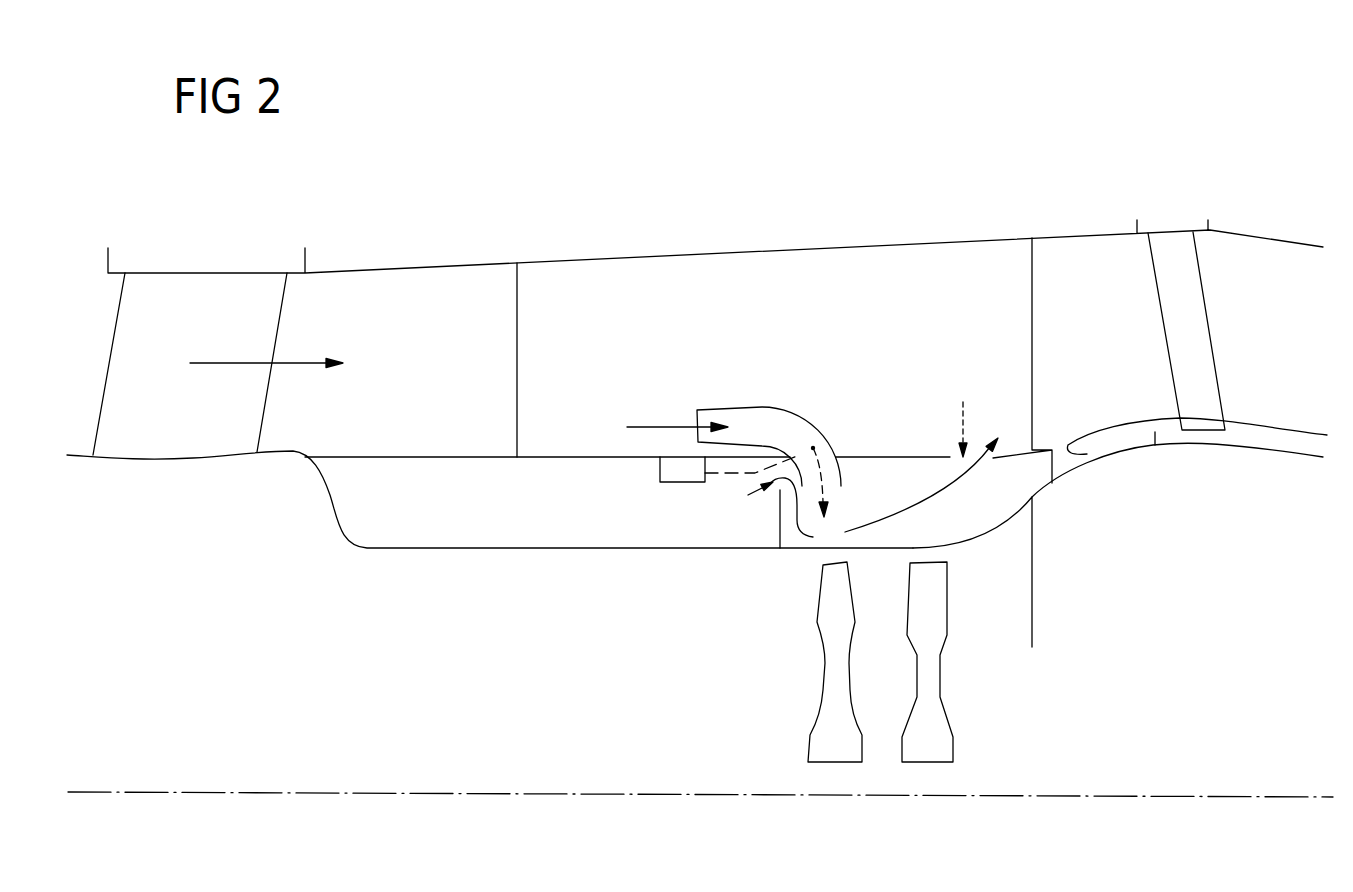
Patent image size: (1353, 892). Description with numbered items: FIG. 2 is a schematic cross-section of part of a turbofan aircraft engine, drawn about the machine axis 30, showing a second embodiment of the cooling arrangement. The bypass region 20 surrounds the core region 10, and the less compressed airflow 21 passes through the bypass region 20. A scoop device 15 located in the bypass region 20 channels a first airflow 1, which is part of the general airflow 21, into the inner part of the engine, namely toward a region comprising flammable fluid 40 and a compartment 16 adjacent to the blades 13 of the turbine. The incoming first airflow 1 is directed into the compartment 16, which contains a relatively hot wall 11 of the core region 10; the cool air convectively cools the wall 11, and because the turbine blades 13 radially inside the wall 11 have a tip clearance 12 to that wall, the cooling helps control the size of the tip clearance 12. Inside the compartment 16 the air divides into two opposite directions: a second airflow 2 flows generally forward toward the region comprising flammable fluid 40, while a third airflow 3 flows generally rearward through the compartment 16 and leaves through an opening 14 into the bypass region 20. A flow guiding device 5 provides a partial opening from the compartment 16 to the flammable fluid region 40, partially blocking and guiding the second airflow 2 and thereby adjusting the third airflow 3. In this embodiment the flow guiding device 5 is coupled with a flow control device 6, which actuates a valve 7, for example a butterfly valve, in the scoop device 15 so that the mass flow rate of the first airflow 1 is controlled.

The first airflow 1 is at (652, 426).
The second airflow 2 is at (771, 507).
The third airflow 3 is at (965, 482).
The flow guiding device 5 is at (777, 518).
The flow control device 6 is at (673, 477).
The valve for the first airflow 7 is at (813, 448).
The core region 10 is at (434, 693).
The wall in the core region 11 is at (993, 533).
The tip clearance 12 is at (928, 555).
The blade 13 is at (937, 572).
The opening for third airflow 14 is at (962, 412).
The scoop device 15 is at (763, 420).
The compartment 16 is at (871, 491).
The bypass region 20 is at (418, 343).
The airflow in the bypass region 21 is at (225, 362).
The machine axis 30 is at (1247, 797).
The region comprising flammable fluids 40 is at (448, 519).